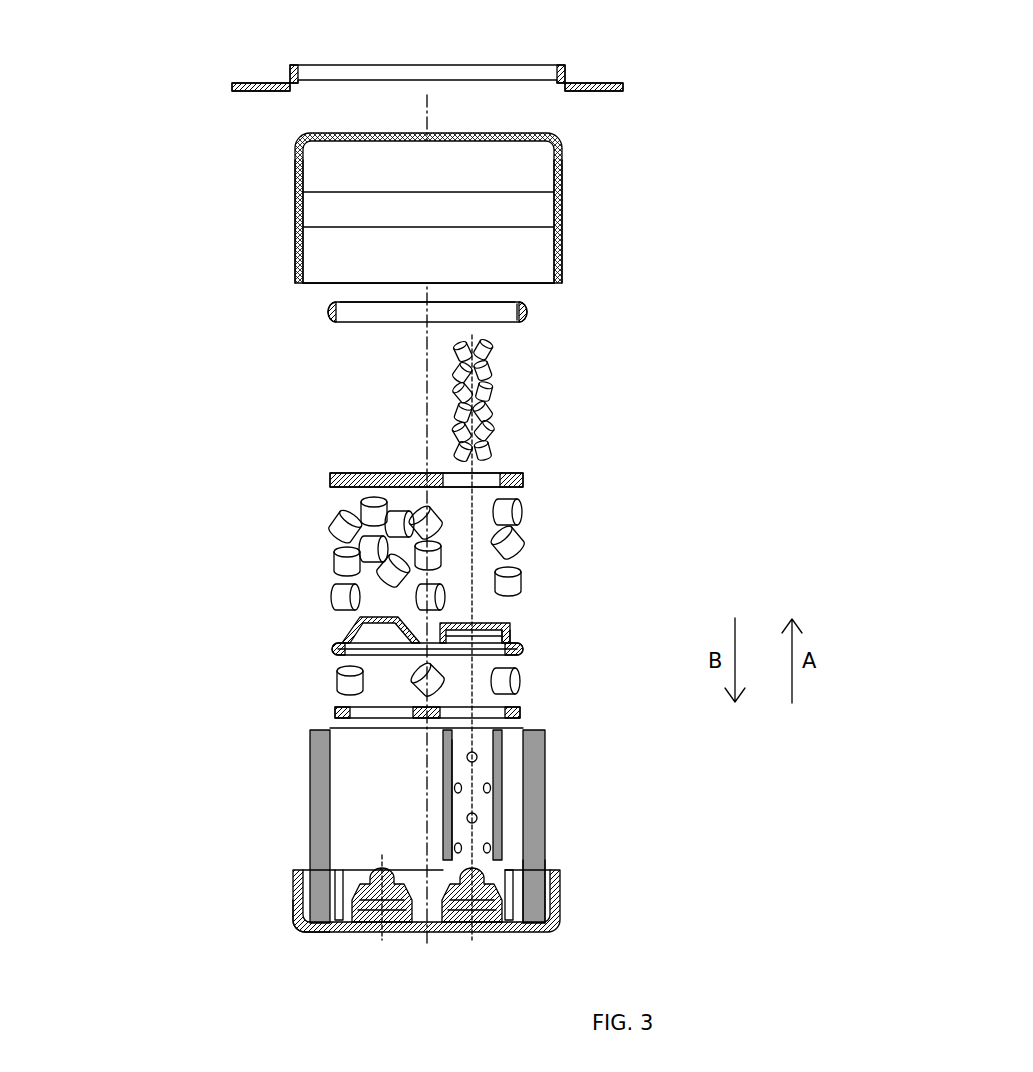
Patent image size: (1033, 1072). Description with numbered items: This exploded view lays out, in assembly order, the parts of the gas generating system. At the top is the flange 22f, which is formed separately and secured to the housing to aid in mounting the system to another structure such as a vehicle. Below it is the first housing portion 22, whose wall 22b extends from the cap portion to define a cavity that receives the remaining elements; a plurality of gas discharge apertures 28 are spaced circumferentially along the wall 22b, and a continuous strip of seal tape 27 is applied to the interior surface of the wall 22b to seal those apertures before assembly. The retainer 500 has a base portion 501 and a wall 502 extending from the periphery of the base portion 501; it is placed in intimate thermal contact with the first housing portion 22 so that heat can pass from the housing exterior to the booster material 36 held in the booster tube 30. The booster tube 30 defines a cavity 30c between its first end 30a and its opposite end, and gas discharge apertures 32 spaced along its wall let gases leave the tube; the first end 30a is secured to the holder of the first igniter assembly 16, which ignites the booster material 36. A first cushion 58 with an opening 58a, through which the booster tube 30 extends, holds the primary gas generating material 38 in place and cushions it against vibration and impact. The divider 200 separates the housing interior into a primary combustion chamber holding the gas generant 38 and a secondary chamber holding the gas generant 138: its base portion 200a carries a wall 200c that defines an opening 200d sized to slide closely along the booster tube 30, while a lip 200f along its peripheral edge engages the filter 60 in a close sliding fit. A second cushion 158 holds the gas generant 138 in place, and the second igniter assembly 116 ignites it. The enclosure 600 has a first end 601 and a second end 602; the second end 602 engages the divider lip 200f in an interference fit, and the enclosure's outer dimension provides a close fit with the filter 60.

The flange 22f is at (582, 82).
The first housing portion 22 is at (408, 198).
The seal tape 27 is at (322, 216).
The gas discharge apertures 28 is at (560, 205).
The wall 22b is at (296, 258).
The retainer 500 is at (432, 313).
The base portion 501 is at (508, 301).
The wall 502 is at (528, 312).
The booster material 36 is at (490, 412).
The first cushion 58 is at (441, 446).
The opening 58a is at (490, 480).
The primary gas generating material 38 is at (515, 545).
The divider 200 is at (416, 634).
The lip 200f is at (332, 649).
The base portion 200a is at (510, 649).
The wall 200c is at (507, 624).
The opening 200d is at (508, 632).
The gas generant material 138 is at (337, 692).
The second cushion 158 is at (336, 710).
The booster tube 30 is at (456, 821).
The filter 60 is at (316, 855).
The gas discharge apertures 32 is at (478, 757).
The cavity 30c is at (480, 806).
The first end 30a is at (553, 887).
The enclosure 600 is at (361, 929).
The second end 602 is at (295, 880).
The first end 601 is at (312, 932).
The second igniter assembly 116 is at (352, 930).
The first igniter assembly 16 is at (490, 930).